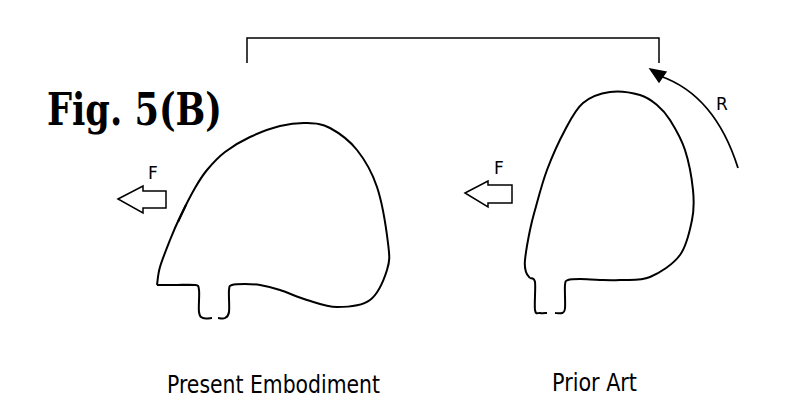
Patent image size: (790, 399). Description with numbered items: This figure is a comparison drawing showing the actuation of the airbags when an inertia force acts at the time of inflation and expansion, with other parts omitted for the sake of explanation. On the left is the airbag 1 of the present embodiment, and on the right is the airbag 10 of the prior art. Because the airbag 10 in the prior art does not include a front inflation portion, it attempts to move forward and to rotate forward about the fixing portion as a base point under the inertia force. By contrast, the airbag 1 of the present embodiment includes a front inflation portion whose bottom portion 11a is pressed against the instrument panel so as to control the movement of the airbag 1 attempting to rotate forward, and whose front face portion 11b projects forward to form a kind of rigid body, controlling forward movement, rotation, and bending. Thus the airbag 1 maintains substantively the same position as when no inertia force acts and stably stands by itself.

The airbag 1 is at (308, 123).
The airbag in the prior art 10 is at (611, 92).
The bottom portion 11a is at (173, 288).
The front face portion 11b is at (182, 214).